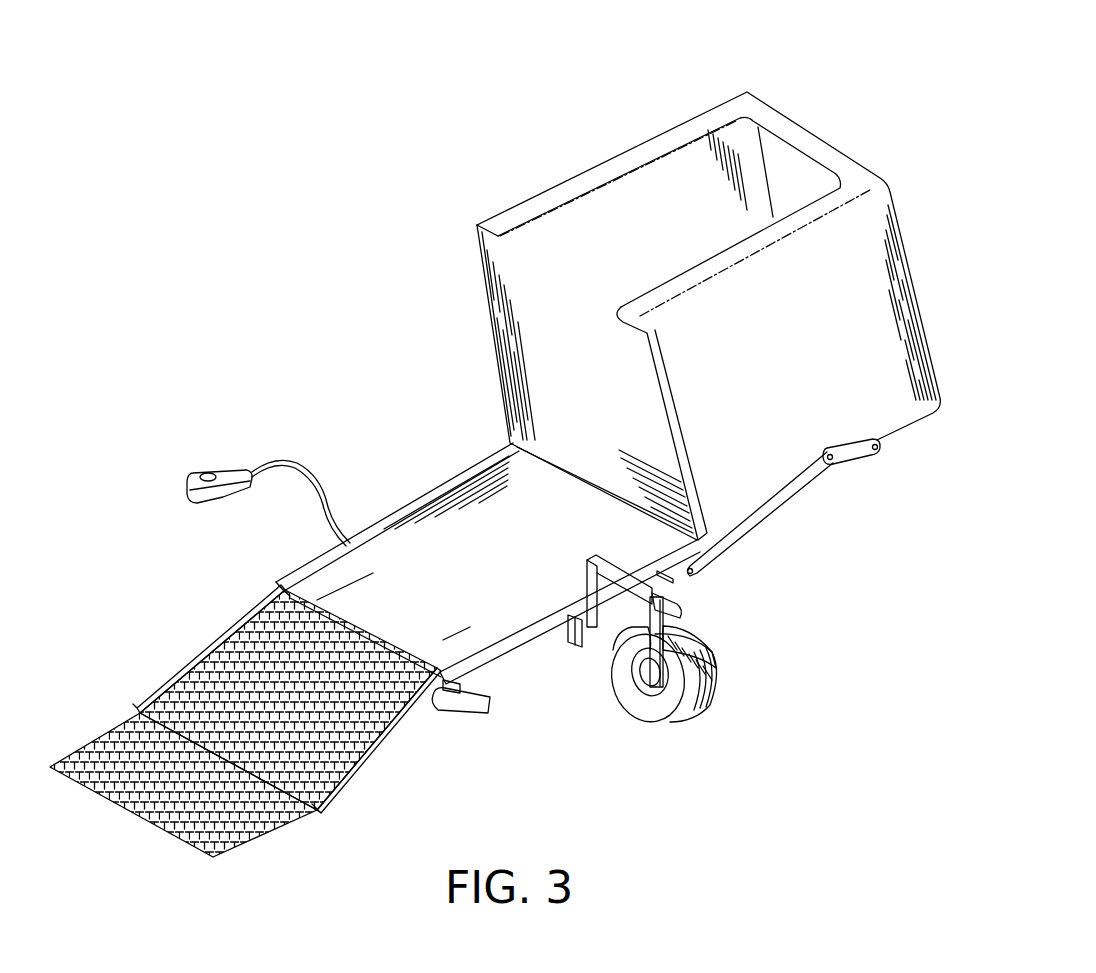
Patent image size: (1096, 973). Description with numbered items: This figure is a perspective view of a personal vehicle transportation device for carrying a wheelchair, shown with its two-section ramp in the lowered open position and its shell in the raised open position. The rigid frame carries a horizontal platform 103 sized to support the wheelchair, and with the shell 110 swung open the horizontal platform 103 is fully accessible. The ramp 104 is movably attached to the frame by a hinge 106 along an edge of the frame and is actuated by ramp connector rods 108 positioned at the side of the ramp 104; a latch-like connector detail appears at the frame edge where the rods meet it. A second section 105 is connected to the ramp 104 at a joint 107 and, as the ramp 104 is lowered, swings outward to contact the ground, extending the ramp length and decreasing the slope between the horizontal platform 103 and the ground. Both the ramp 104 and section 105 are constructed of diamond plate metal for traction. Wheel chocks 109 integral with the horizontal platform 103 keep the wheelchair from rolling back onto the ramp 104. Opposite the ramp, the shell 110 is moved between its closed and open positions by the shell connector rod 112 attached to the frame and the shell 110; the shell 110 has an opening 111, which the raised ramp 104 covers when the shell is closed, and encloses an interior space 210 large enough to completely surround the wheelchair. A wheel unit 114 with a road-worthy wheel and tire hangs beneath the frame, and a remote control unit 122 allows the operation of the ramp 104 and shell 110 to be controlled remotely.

The horizontal platform 103 is at (443, 525).
The ramp 104 is at (323, 767).
The second section 105 is at (183, 817).
The hinge 106 is at (387, 647).
The joint 107 is at (168, 717).
The ramp connector rods 108 is at (452, 708).
The wheel chocks 109 is at (310, 587).
The shell 110 is at (763, 110).
The opening 111 is at (603, 182).
The shell connector rod 112 is at (858, 452).
The wheel unit 114 is at (672, 602).
The remote control unit 122 is at (235, 470).
The interior space 210 is at (528, 243).